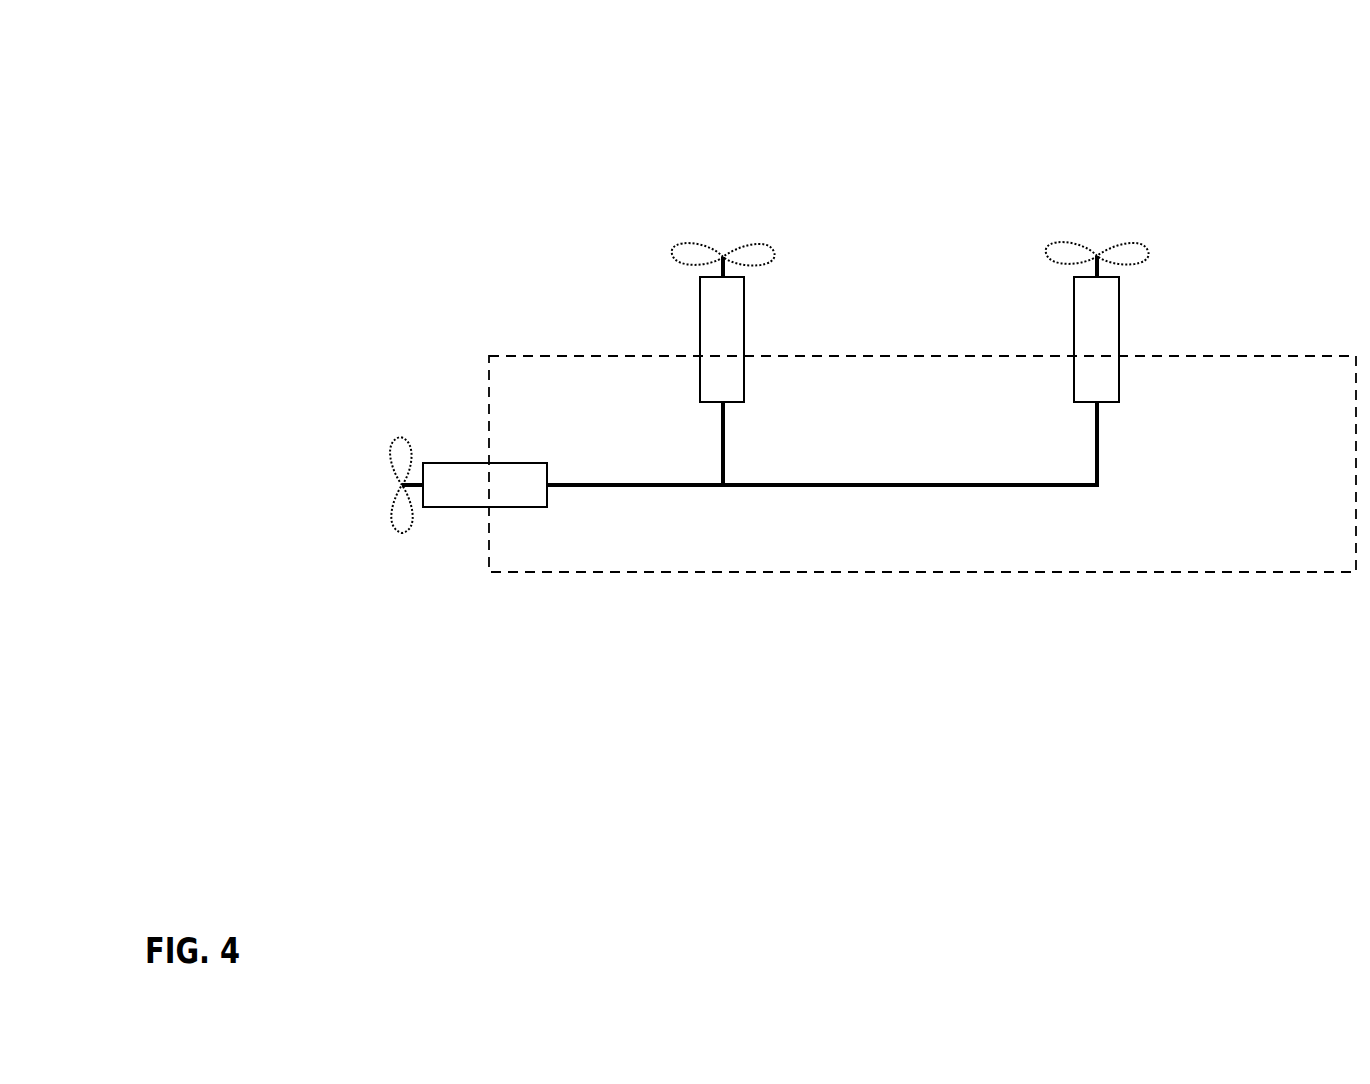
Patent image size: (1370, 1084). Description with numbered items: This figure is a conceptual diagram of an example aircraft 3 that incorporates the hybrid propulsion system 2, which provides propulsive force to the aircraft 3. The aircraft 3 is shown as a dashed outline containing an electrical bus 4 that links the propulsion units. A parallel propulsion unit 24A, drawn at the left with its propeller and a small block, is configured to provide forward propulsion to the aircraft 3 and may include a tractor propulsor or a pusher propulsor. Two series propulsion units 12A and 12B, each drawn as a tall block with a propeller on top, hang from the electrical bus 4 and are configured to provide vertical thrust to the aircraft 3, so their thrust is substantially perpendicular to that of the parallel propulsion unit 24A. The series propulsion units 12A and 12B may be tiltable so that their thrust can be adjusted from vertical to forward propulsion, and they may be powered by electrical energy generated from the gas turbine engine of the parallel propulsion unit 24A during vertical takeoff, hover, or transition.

The system 2 is at (1271, 79).
The aircraft 3 is at (489, 395).
The electrical bus 4 is at (817, 483).
The series propulsion unit 12A is at (658, 302).
The series propulsion unit 12B is at (1031, 304).
The parallel propulsion unit 24A is at (369, 501).